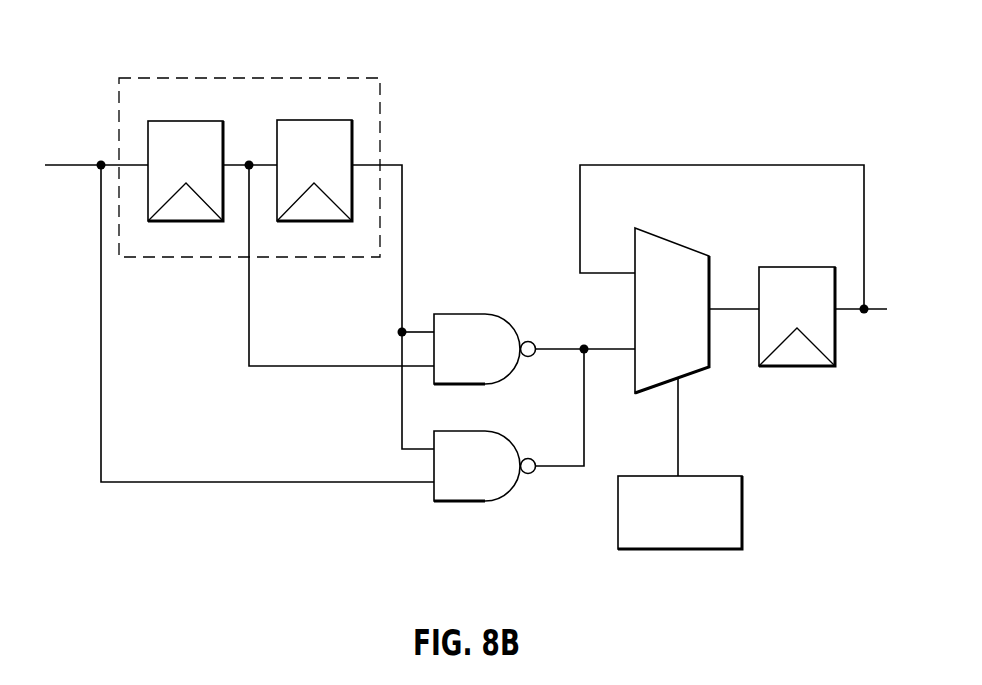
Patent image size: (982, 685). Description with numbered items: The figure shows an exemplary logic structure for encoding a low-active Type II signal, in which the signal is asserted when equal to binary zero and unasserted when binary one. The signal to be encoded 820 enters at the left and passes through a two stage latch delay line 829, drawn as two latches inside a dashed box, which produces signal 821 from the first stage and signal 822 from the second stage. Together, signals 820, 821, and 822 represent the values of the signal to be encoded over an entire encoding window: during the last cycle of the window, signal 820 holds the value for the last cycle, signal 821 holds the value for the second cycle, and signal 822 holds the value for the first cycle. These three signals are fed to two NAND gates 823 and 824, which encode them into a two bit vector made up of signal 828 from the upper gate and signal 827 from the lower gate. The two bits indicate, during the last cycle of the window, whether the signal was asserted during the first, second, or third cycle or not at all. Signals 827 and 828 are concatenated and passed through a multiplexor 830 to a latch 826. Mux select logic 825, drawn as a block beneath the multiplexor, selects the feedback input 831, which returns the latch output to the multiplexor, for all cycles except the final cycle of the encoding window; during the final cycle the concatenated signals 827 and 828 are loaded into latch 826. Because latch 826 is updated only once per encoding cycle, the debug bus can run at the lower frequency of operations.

The signal to be encoded 820 is at (66, 163).
The two stage latch delay line 829 is at (315, 77).
The signal 822 is at (403, 183).
The signal 821 is at (331, 363).
The NAND gate 823 is at (458, 313).
The NAND gate 824 is at (479, 506).
The signal 828 is at (563, 345).
The signal 827 is at (564, 468).
The multiplexor 830 is at (702, 255).
The input 831 is at (769, 163).
The latch 826 is at (803, 265).
The mux select logic 825 is at (742, 505).